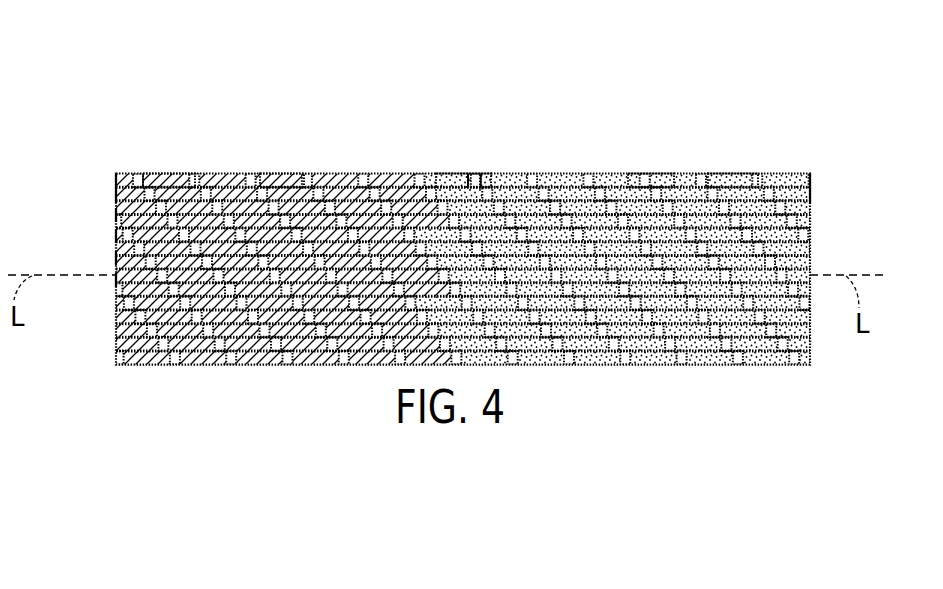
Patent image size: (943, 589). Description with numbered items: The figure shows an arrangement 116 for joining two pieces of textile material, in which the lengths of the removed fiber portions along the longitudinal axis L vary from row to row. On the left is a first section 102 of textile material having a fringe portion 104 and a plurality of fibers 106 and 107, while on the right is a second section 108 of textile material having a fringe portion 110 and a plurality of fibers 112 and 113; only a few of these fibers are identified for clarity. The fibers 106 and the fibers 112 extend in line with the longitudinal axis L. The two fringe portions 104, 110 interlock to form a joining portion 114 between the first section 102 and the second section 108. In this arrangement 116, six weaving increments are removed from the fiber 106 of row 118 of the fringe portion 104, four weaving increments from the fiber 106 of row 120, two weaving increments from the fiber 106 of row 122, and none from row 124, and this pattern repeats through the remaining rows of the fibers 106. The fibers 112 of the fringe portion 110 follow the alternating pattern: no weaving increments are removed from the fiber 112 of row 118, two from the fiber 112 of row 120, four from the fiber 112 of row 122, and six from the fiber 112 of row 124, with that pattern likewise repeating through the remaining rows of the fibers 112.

The first section 102 is at (275, 165).
The fringe portion 104 is at (452, 165).
The fibers 106 is at (108, 192).
The fibers 107 is at (188, 165).
The second section 108 is at (643, 165).
The fringe portion 110 is at (478, 165).
The fibers 112 is at (802, 192).
The fibers 113 is at (752, 165).
The joining portion 114 is at (460, 165).
The arrangement 116 is at (700, 82).
The row 118 is at (110, 207).
The row 120 is at (110, 228).
The row 122 is at (110, 250).
The row 124 is at (110, 272).